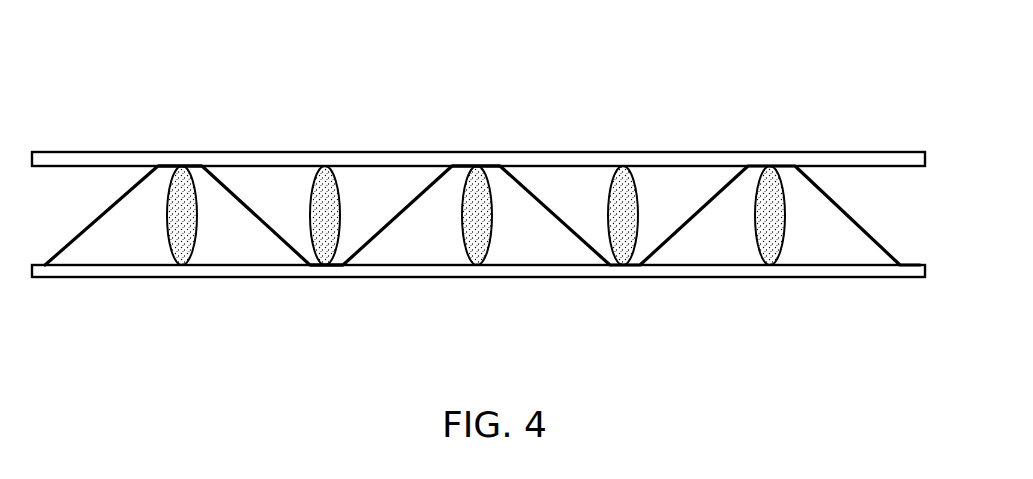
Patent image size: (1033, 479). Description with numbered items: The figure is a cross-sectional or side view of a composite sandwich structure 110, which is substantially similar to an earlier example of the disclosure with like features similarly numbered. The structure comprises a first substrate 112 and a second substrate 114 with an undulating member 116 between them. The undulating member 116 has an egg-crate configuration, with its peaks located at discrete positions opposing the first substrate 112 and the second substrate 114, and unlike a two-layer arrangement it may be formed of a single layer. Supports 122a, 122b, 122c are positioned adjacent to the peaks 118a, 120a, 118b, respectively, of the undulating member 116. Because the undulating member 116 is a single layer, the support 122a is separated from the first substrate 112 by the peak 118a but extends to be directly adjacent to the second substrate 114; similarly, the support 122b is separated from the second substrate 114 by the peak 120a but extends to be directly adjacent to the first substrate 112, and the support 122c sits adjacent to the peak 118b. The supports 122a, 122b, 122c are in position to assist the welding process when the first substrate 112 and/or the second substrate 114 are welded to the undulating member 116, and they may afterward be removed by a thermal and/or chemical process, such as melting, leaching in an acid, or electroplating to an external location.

The composite sandwich structure 110 is at (478, 194).
The first substrate 112 is at (79, 159).
The second substrate 114 is at (723, 270).
The undulating member 116 is at (534, 197).
The peak 118a is at (180, 168).
The peak 118b is at (474, 168).
The peak 120a is at (325, 262).
The support 122a is at (182, 228).
The support 122b is at (325, 195).
The support 122c is at (477, 237).